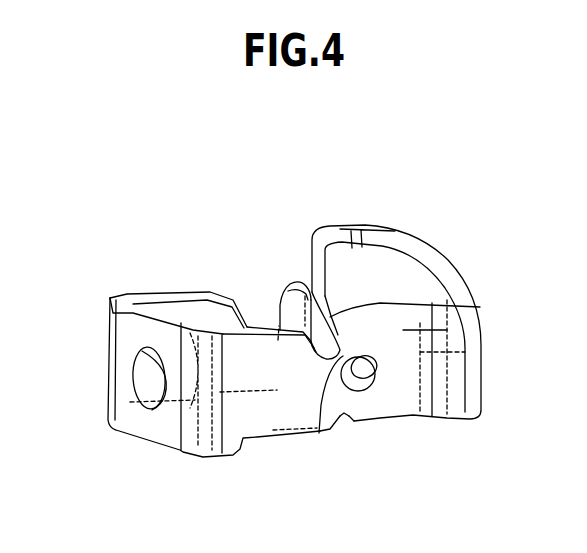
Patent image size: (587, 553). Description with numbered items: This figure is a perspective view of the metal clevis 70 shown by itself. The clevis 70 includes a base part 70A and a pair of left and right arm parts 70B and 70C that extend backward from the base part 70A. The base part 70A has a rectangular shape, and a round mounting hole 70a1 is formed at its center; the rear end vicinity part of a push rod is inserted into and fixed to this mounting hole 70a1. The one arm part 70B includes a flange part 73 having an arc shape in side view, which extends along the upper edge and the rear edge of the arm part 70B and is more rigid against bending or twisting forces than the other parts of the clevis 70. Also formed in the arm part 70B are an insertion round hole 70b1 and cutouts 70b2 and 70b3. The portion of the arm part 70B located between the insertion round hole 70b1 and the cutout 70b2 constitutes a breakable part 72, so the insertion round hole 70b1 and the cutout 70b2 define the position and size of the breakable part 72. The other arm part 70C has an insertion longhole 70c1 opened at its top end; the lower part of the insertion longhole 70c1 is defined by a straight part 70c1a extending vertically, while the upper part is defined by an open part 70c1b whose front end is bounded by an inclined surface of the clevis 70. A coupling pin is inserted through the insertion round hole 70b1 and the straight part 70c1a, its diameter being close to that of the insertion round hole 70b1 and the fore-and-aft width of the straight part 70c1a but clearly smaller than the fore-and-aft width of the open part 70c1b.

The clevis 70 is at (453, 263).
The base part 70A is at (147, 335).
The arm part 70B is at (447, 330).
The arm part 70C is at (190, 307).
The mounting hole 70a1 is at (165, 372).
The insertion round hole 70b1 is at (370, 378).
The cutout 70b2 is at (480, 307).
The cutout 70b3 is at (344, 416).
The insertion longhole 70c1 is at (275, 285).
The straight part 70c1a is at (278, 340).
The open part 70c1b is at (251, 300).
The breakable part 72 is at (319, 434).
The flange part 73 is at (385, 230).